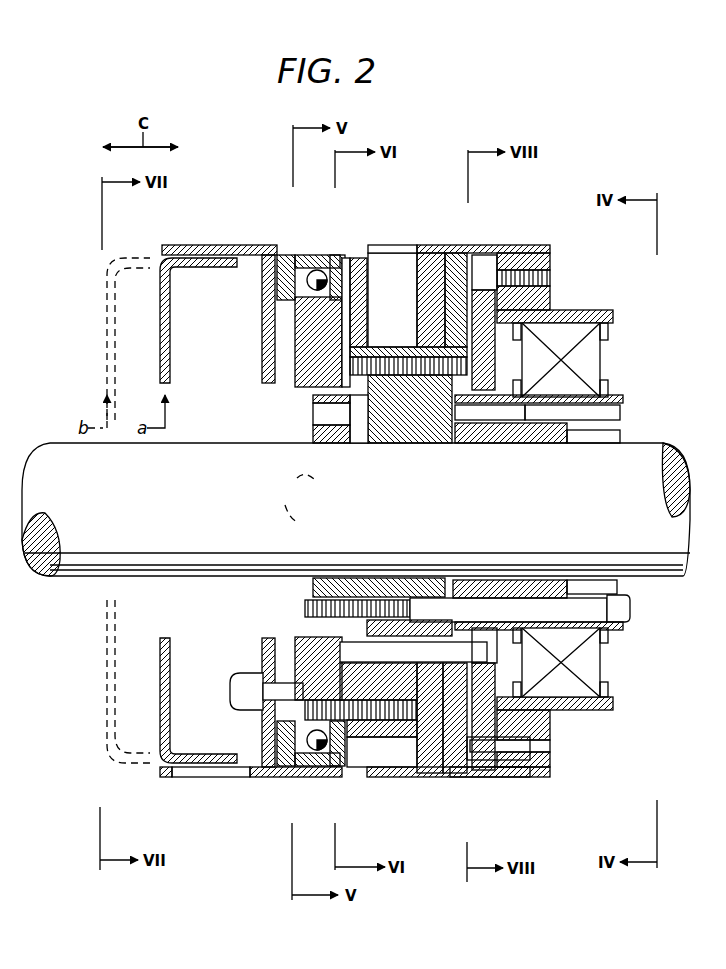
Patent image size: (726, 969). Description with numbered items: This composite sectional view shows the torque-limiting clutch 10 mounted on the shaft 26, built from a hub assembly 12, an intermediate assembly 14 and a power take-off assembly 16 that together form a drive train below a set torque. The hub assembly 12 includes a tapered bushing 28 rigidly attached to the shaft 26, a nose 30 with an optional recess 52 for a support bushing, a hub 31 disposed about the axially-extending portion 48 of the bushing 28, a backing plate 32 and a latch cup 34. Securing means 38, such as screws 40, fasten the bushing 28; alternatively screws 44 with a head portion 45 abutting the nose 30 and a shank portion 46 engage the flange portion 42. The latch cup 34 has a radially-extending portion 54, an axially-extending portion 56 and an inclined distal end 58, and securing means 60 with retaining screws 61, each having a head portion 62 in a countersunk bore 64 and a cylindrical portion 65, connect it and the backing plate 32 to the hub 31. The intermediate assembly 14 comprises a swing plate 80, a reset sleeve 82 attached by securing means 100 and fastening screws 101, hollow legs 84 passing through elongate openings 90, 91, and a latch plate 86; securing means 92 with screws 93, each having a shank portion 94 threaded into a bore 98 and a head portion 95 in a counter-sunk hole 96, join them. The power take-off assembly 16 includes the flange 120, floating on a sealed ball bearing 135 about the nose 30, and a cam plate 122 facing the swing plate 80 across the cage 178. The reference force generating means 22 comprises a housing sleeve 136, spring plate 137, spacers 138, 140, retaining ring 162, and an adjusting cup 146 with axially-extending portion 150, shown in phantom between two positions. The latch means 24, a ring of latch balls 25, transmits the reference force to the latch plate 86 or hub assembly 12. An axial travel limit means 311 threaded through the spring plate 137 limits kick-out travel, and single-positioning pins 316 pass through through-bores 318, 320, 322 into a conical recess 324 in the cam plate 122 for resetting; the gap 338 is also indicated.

The clutch 10 is at (575, 173).
The hub assembly 12 is at (623, 410).
The intermediate assembly 14 is at (408, 283).
The power take-off assembly 16 is at (605, 310).
The reference force generating means 22 is at (150, 243).
The latch means 24 is at (263, 330).
The latch balls 25 is at (313, 245).
The shaft 26 is at (356, 509).
The bushing 28 is at (313, 436).
The nose 30 is at (623, 430).
The hub 31 is at (398, 400).
The backing plate 32 is at (358, 258).
The latch cup 34 is at (346, 258).
The means for securing the bushing 38 is at (637, 610).
The screws 40 is at (607, 632).
The flange portion 42 is at (313, 405).
The screws 44 is at (605, 650).
The head portion 45 is at (635, 618).
The shank portion 46 is at (478, 615).
The axially-extending portion 48 is at (398, 580).
The recess 52 is at (617, 585).
The radially-extending portion 54 is at (366, 290).
The axially-extending portion 56 is at (318, 268).
The distal end 58 is at (290, 770).
The securing means 60 is at (407, 350).
The retaining screws 61 is at (425, 400).
The head portion 62 is at (300, 388).
The countersunk bore 64 is at (352, 350).
The cylindrical portion 65 is at (370, 400).
The swing plate 80 is at (430, 253).
The reset sleeve 82 is at (520, 245).
The legs 84 is at (392, 745).
The latch plate 86 is at (305, 637).
The elongate opening 90 is at (320, 768).
The elongate opening 91 is at (378, 745).
The securing means 92 is at (530, 779).
The screws 93 is at (277, 775).
The shank portion 94 is at (405, 752).
The head portion 95 is at (480, 772).
The counter-sunk hole 96 is at (550, 730).
The bore 98 is at (300, 716).
The securing means 100 is at (437, 787).
The fastening screws 101 is at (445, 785).
The power take-off flange 120 is at (548, 302).
The cam plate 122 is at (497, 370).
The sealed ball bearing 135 is at (590, 355).
The housing sleeve 136 is at (188, 245).
The spring plate 137 is at (263, 365).
The spacer 138 is at (300, 257).
The spacer 140 is at (300, 255).
The adjusting cup 146 is at (165, 292).
The axially-extending portion 150 is at (197, 268).
The retaining ring 162 is at (287, 298).
The cage 178 is at (478, 255).
The axial travel limit means 311 is at (235, 705).
The single-positioning pins 316 is at (318, 610).
The through-bore 318 is at (340, 655).
The through-bore 320 is at (350, 650).
The through-bore 322 is at (432, 625).
The conical recess 324 is at (484, 640).
The gap 338 is at (313, 832).